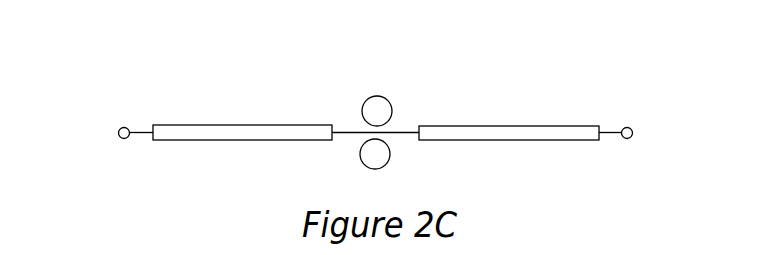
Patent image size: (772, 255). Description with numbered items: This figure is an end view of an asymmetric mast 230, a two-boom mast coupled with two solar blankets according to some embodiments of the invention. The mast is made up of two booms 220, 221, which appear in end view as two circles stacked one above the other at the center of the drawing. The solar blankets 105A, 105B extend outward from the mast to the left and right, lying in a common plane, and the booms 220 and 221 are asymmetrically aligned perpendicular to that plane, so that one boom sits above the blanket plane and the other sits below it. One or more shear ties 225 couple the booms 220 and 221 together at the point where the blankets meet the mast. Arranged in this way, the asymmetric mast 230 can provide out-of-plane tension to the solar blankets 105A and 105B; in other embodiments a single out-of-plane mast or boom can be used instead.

The solar blanket 105A is at (166, 135).
The solar blanket 105B is at (596, 132).
The boom 220 is at (391, 152).
The boom 221 is at (363, 101).
The shear tie 225 is at (370, 134).
The asymmetric mast 230 is at (411, 107).